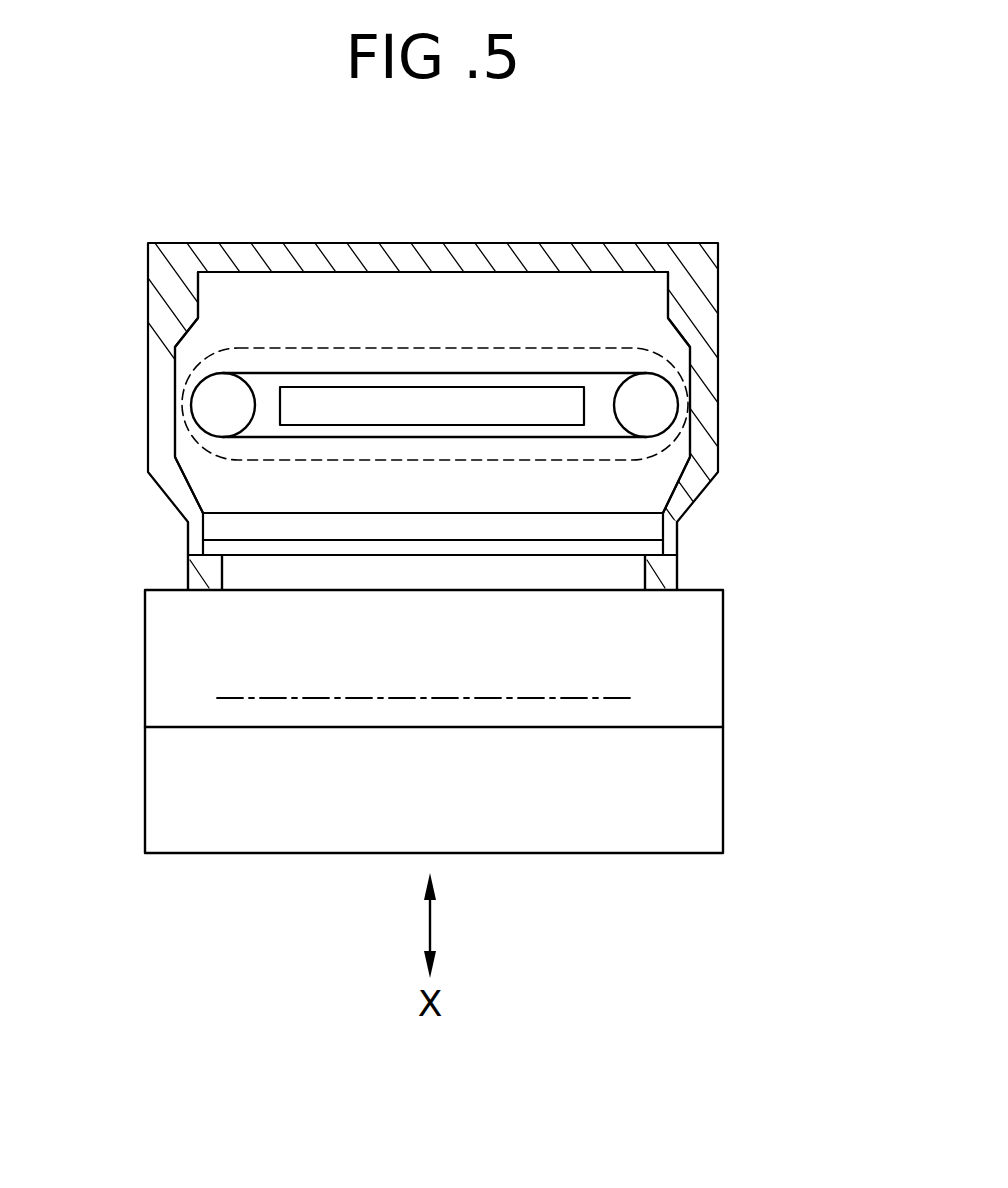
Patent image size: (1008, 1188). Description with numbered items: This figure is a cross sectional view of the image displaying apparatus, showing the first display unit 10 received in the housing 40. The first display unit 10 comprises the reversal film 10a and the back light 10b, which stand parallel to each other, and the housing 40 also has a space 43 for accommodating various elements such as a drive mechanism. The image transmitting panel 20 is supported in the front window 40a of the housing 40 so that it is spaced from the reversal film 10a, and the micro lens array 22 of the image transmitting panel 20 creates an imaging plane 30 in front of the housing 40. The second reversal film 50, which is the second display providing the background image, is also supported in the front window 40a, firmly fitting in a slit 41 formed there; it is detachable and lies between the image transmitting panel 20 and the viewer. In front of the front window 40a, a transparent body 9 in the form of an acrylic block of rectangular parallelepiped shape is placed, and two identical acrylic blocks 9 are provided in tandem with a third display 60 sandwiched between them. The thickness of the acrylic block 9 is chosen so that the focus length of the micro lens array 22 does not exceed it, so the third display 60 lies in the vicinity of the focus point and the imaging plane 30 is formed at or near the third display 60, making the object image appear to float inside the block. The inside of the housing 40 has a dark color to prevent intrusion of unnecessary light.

The transparent body 9 is at (165, 667).
The first display unit 10 is at (640, 355).
The reversal film 10a is at (300, 373).
The back light 10b is at (408, 422).
The image transmitting panel 20 is at (375, 532).
The micro lens array 22 is at (493, 530).
The imaging plane 30 is at (612, 698).
The housing 40 is at (718, 443).
The front window 40a is at (690, 575).
The slit 41 is at (176, 537).
The space 43 is at (484, 330).
The second reversal film 50 is at (310, 547).
The third display 60 is at (723, 727).